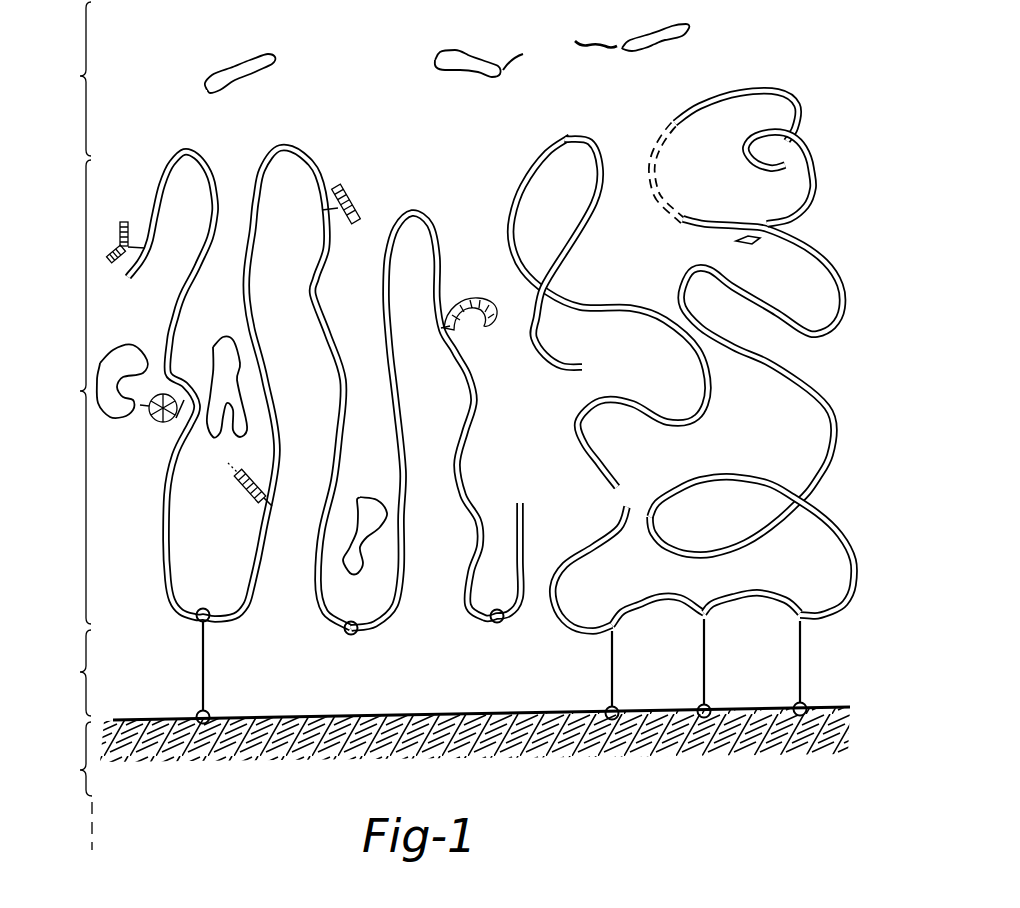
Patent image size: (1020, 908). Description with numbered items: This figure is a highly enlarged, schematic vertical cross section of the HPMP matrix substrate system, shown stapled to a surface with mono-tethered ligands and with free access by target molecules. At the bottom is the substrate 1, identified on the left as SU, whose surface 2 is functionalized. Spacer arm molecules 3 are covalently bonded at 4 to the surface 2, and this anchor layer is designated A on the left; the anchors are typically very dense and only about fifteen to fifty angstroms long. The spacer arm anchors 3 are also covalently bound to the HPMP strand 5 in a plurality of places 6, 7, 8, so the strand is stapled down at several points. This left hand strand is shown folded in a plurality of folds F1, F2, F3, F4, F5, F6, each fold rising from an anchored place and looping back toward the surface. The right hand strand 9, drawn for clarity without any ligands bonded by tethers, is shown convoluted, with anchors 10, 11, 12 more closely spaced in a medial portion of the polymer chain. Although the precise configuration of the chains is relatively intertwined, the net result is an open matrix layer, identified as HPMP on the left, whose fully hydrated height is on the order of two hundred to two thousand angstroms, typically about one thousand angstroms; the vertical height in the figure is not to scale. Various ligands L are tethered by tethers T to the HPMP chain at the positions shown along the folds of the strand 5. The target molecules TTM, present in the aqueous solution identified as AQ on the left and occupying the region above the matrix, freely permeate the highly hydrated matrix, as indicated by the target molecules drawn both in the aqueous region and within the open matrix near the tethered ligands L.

The substrate 1 is at (393, 787).
The surface 2 is at (281, 712).
The spacer arm molecules 3 is at (204, 670).
The covalent bond point 4 is at (209, 712).
The HPMP strand 5 is at (462, 484).
The binding place 6 is at (204, 607).
The binding place 7 is at (352, 613).
The binding place 8 is at (495, 598).
The right hand strand 9 is at (592, 458).
The anchor 10 is at (613, 666).
The anchor 11 is at (705, 666).
The anchor 12 is at (801, 666).
The fold F1 is at (180, 148).
The fold F2 is at (169, 621).
The fold F3 is at (273, 142).
The fold F4 is at (323, 629).
The fold F5 is at (424, 393).
The fold F6 is at (463, 618).
The target molecules TTM is at (238, 61).
The tether T is at (140, 245).
The ligand L is at (120, 230).
The aqueous solution AQ is at (64, 79).
The HPMP matrix layer HPMP is at (51, 392).
The anchor layer A is at (73, 673).
The substrate SU is at (65, 786).